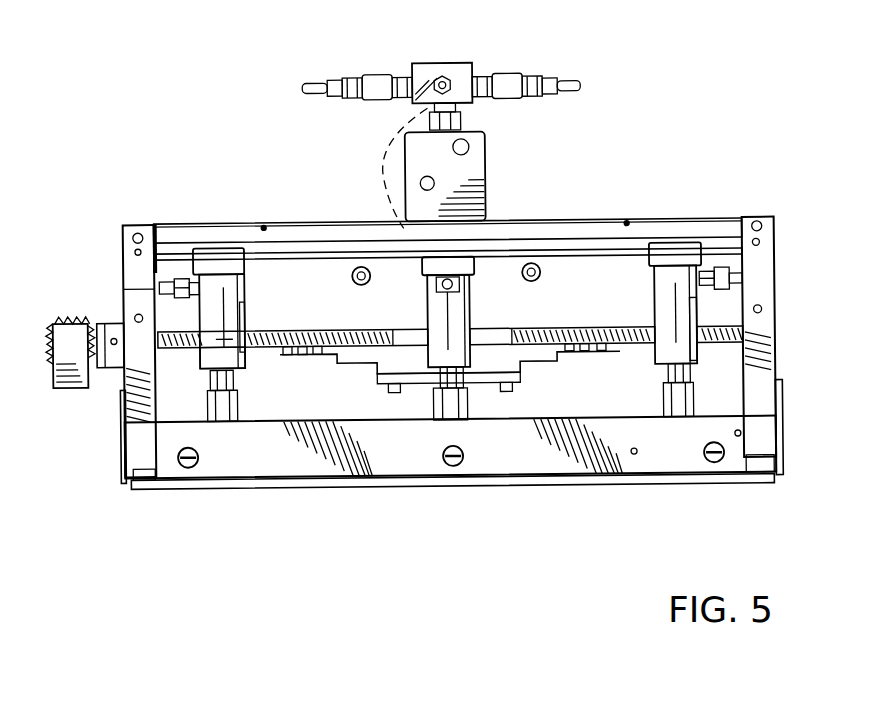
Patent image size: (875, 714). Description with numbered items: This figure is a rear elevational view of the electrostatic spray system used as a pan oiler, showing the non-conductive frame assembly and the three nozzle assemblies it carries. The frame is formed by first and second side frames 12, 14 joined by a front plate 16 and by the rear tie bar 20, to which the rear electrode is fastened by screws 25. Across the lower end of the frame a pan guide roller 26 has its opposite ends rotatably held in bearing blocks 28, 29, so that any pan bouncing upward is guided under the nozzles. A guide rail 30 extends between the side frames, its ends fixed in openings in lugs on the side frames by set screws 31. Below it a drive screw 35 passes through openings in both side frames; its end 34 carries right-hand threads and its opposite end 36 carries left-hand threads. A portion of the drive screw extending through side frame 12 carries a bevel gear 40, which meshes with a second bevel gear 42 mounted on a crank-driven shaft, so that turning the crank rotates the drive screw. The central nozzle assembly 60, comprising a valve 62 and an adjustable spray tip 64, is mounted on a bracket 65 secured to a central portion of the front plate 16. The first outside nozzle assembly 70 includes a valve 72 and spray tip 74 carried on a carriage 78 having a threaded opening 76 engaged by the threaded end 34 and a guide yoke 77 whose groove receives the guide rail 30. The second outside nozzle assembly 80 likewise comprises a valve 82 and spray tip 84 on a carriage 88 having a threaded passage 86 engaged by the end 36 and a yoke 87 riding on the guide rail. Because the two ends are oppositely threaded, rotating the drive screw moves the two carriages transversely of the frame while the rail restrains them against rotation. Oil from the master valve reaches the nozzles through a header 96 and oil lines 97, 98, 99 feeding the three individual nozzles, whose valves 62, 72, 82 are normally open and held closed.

The first side frame 12 is at (122, 222).
The second side frame 14 is at (775, 222).
The front plate 16 is at (561, 238).
The rear tie bar 20 is at (355, 476).
The screws 25 is at (188, 465).
The pan guide roller 26 is at (145, 480).
The bearing block 28 is at (121, 438).
The bearing block 29 is at (782, 397).
The guide rail 30 is at (296, 251).
The set screws 31 is at (133, 249).
The threaded end 34 is at (312, 332).
The drive screw 35 is at (488, 338).
The threaded end 36 is at (675, 345).
The bevel gear 40 is at (100, 362).
The second bevel gear 42 is at (52, 313).
The central nozzle assembly 60 is at (470, 299).
The valve 62 is at (449, 311).
The adjustable spray tip 64 is at (456, 405).
The bracket 65 is at (482, 217).
The first outside nozzle assembly 70 is at (243, 372).
The valve 72 is at (247, 325).
The spray tip 74 is at (226, 405).
The threaded opening 76 is at (200, 350).
The guide yoke 77 is at (265, 224).
The carriage 78 is at (230, 292).
The second outside nozzle assembly 80 is at (664, 368).
The valve 82 is at (665, 278).
The spray tip 84 is at (672, 402).
The threaded passage 86 is at (701, 353).
The yoke 87 is at (644, 222).
The carriage 88 is at (665, 248).
The header 96 is at (437, 53).
The oil line 97 is at (310, 82).
The oil line 98 is at (447, 76).
The oil line 99 is at (568, 82).